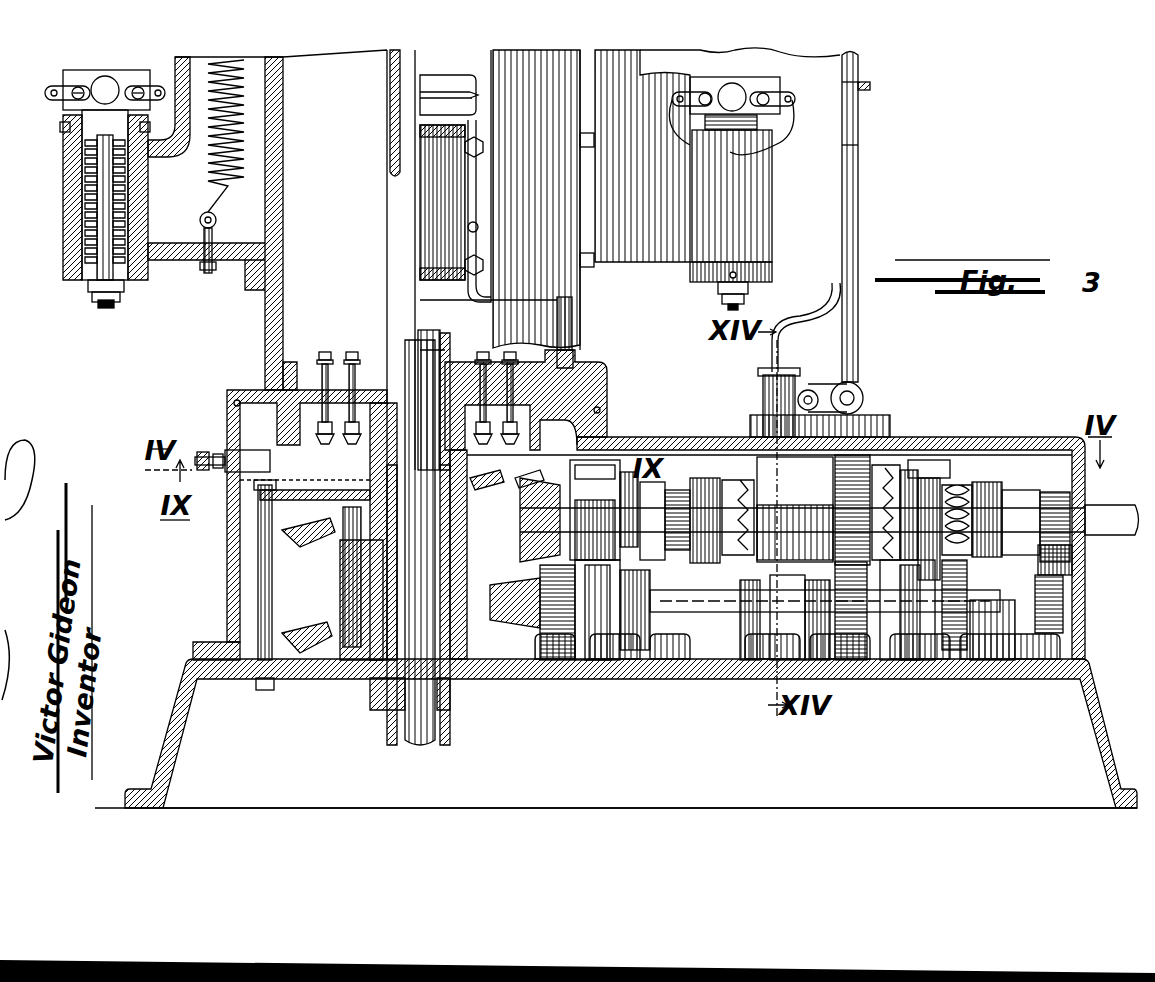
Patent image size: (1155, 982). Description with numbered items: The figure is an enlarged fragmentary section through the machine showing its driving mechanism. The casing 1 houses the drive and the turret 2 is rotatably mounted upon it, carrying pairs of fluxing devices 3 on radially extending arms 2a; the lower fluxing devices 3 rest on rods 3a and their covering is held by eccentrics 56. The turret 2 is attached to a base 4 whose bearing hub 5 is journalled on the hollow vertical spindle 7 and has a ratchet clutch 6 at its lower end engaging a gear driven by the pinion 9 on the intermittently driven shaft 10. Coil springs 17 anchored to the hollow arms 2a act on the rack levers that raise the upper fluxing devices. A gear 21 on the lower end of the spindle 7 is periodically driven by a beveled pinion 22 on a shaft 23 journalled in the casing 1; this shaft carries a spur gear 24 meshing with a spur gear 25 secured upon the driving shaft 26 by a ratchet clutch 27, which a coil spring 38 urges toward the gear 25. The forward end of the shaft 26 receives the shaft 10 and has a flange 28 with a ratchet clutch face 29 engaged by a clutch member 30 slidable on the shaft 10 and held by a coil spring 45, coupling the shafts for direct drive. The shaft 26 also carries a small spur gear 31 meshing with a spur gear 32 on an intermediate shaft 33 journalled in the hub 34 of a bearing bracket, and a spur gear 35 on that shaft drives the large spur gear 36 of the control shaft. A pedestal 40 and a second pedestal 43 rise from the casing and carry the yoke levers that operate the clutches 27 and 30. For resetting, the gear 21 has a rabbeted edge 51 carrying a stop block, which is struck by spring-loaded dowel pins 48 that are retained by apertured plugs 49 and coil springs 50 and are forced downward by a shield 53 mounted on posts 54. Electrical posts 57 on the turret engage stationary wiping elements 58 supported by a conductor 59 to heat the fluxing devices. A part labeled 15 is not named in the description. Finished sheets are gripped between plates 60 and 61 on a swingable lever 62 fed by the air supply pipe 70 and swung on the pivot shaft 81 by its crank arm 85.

The casing 1 is at (650, 448).
The turret 2 is at (557, 320).
The radially extending arm 2a is at (668, 240).
The fluxing device 3 is at (90, 75).
The rods 3a is at (100, 237).
The base 4 is at (582, 398).
The bearing hub 5 is at (378, 422).
The ratchet clutch 6 is at (500, 396).
The hollow vertical spindle 7 is at (397, 335).
The pinion 9 is at (530, 480).
The shaft 10 is at (663, 570).
The vertical shaft 15 is at (430, 693).
The coil springs 17 is at (248, 158).
The gear 21 is at (363, 635).
The beveled pinion 22 is at (535, 707).
The shaft 23 is at (688, 560).
The spur gear 24 is at (853, 660).
The spur gear 25 is at (852, 467).
The driving shaft 26 is at (1110, 507).
The clutch 27 is at (898, 477).
The flange 28 is at (750, 467).
The ratchet clutch face 29 is at (750, 562).
The clutch member 30 is at (732, 470).
The small spur gear 31 is at (1045, 493).
The spur gear 32 is at (1052, 607).
The intermediate shaft 33 is at (1065, 553).
The hub 34 is at (990, 660).
The spur gear 35 is at (963, 480).
The large spur gear 36 is at (955, 655).
The coil spring 38 is at (945, 470).
The pedestal 40 is at (918, 625).
The second pedestal 43 is at (707, 633).
The coil spring 45 is at (655, 565).
The dowel pins 48 is at (518, 500).
The apertured plugs 49 is at (345, 577).
The coil springs 50 is at (362, 540).
The rabbeted edge 51 is at (510, 603).
The shield 53 is at (350, 495).
The posts 54 is at (270, 593).
The eccentrics 56 is at (163, 87).
The electrical posts 57 is at (317, 400).
The wiping elements 58 is at (350, 455).
The electrical conductor 59 is at (267, 462).
The plate 60 is at (864, 86).
The plate 61 is at (862, 95).
The swingable lever 62 is at (857, 258).
The fluid supply pipe 70 is at (835, 283).
The pivot shaft 81 is at (850, 398).
The crank arm 85 is at (806, 390).